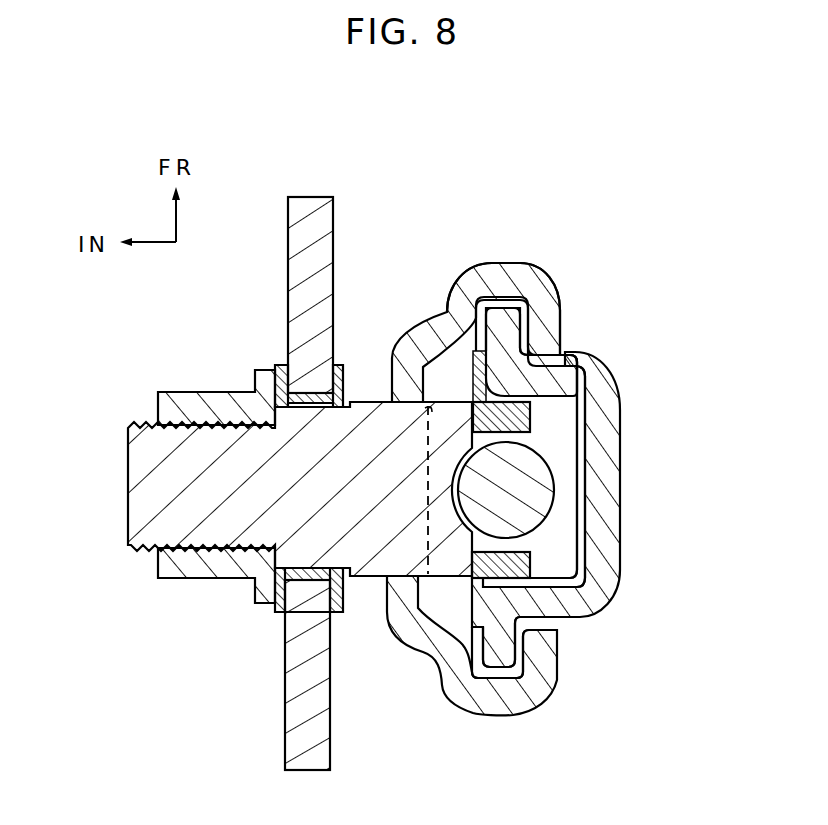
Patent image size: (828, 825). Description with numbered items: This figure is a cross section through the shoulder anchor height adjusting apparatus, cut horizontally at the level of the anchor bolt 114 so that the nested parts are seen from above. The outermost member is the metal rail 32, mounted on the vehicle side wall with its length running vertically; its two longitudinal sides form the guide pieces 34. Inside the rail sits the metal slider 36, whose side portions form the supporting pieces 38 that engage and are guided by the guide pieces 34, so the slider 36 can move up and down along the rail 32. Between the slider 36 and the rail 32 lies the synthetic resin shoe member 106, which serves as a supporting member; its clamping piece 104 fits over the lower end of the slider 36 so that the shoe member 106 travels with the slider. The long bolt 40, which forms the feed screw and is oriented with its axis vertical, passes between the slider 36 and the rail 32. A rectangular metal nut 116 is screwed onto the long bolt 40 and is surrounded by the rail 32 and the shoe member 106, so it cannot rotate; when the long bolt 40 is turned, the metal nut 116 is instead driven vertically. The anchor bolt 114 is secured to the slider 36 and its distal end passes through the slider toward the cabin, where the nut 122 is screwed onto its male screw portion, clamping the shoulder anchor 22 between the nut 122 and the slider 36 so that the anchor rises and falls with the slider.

The shoulder anchor 22 is at (295, 300).
The rail 32 is at (622, 428).
The guide piece 34 is at (503, 336).
The slider 36 is at (477, 490).
The supporting piece 38 is at (503, 270).
The long bolt 40 is at (528, 500).
The clamping piece 104 is at (447, 688).
The shoe member 106 is at (533, 425).
The anchor bolt 114 is at (130, 521).
The metal nut 116 is at (563, 462).
The nut 122 is at (195, 579).